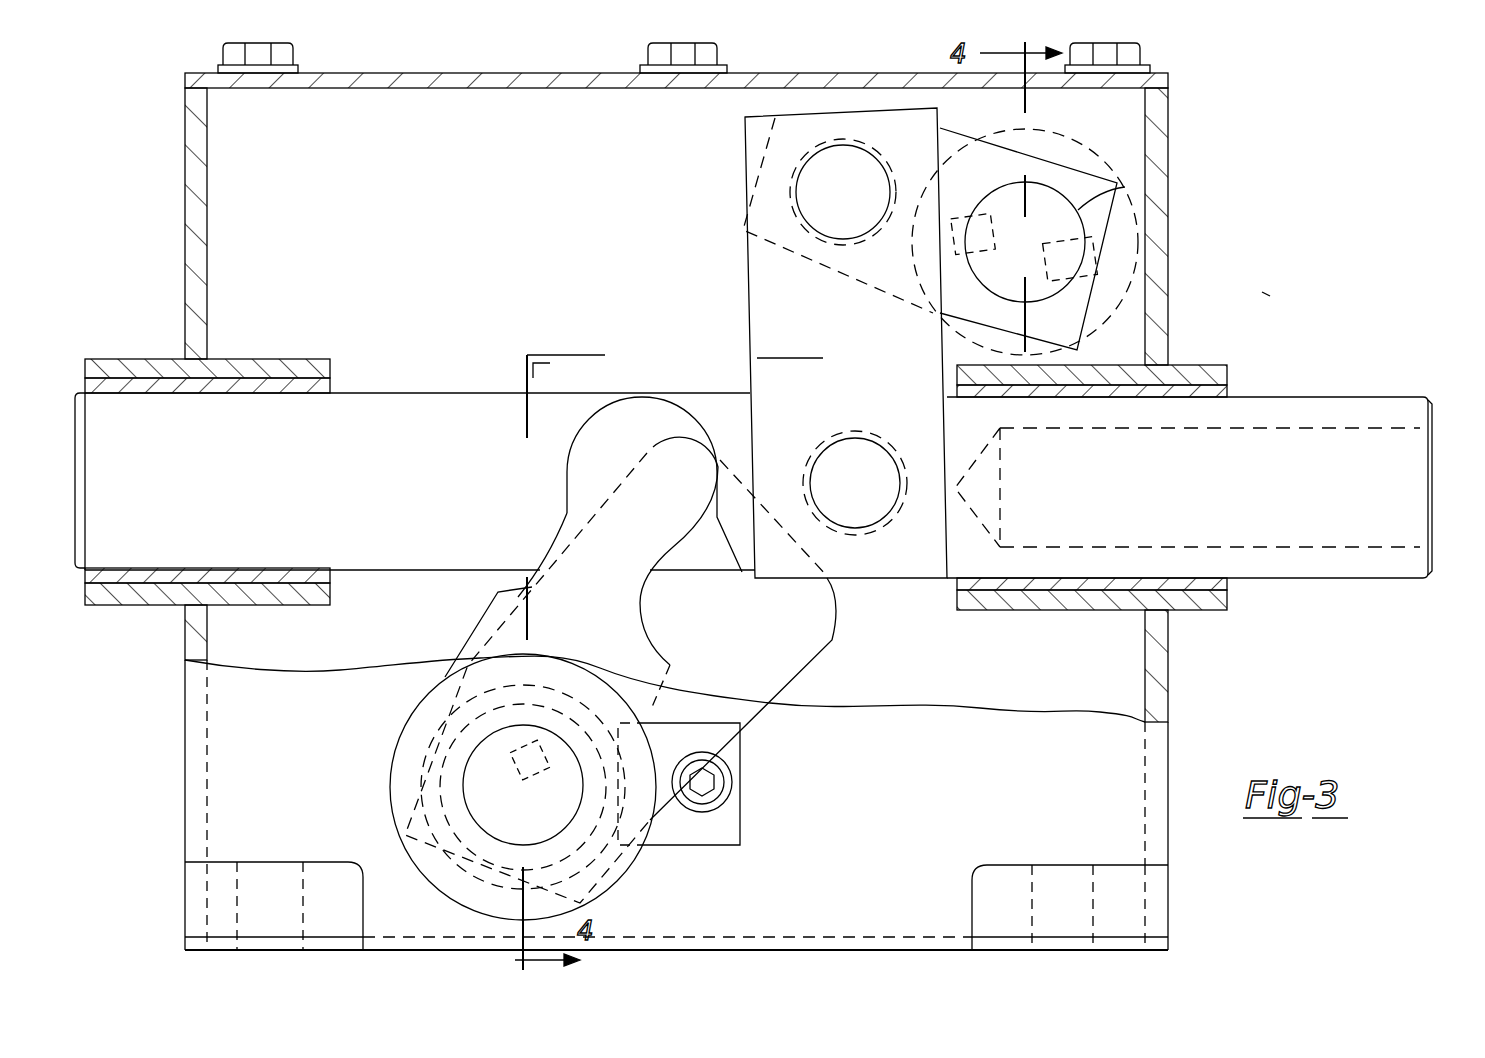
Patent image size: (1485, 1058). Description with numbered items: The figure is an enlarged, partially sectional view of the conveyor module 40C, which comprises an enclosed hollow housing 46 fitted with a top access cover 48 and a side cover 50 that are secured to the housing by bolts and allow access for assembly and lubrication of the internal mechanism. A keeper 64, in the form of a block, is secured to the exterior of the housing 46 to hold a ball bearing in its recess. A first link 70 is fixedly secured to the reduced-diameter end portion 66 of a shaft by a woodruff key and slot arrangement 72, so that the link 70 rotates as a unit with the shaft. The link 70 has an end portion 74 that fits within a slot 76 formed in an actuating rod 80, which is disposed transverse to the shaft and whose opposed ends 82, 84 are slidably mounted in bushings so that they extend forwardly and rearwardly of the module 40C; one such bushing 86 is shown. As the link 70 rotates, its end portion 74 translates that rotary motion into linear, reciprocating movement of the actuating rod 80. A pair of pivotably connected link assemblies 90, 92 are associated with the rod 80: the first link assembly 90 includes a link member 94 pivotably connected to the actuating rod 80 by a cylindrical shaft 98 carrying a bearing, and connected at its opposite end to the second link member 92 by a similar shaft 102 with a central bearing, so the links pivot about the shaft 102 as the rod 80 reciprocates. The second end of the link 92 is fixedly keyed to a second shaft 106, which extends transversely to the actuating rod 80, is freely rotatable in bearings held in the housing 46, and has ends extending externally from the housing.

The module 40C is at (1266, 292).
The housing 46 is at (490, 64).
The top access cover 48 is at (623, 73).
The side cover 50 is at (187, 216).
The keeper 64 is at (740, 832).
The end portion of the shaft 66 is at (492, 806).
The first link 70 is at (490, 608).
The woodruff key and slot arrangement 72 is at (515, 748).
The end portion of the link 74 is at (597, 412).
The slot 76 is at (722, 560).
The actuating rod 80 is at (350, 394).
The end of the actuating rod 82 is at (78, 405).
The end of the actuating rod 84 is at (1437, 418).
The bushing 86 is at (227, 383).
The first link assembly 90 is at (706, 249).
The second link member 92 is at (950, 128).
The link member 94 is at (752, 329).
The cylindrical shaft 98 is at (878, 522).
The shaft 102 is at (815, 183).
The second shaft 106 is at (1125, 187).